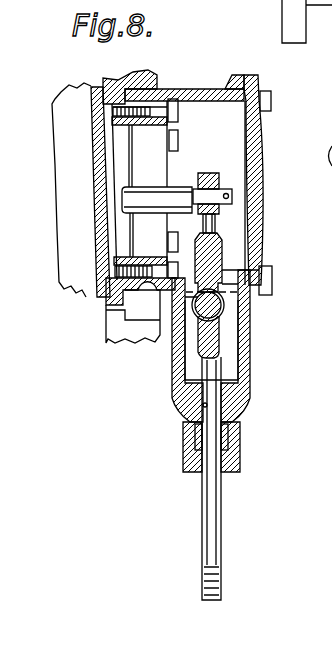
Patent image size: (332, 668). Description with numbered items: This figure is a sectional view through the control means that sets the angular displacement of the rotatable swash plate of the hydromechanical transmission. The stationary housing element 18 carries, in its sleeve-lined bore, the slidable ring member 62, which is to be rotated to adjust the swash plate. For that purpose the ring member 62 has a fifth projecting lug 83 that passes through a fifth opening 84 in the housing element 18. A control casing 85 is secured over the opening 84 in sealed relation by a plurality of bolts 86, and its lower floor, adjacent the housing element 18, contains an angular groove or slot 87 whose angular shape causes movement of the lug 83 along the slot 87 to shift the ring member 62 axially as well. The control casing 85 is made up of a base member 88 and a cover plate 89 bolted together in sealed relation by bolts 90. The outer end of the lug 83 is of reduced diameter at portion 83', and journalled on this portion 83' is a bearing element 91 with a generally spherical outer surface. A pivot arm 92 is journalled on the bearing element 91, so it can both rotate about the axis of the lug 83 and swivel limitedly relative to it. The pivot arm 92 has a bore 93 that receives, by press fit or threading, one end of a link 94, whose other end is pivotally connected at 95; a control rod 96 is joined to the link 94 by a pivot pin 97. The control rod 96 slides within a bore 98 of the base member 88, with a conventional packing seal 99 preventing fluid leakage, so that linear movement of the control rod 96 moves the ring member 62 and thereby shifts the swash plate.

The housing element 18 is at (102, 362).
The ring member 62 is at (84, 305).
The projecting lug 83 is at (157, 216).
The reduced-diameter portion 83' is at (218, 172).
The fifth opening 84 is at (118, 252).
The control casing 85 is at (271, 132).
The bolts 86 is at (172, 140).
The angular groove or slot 87 is at (138, 148).
The base member 88 is at (228, 84).
The cover plate 89 is at (262, 165).
The bolts 90 is at (271, 100).
The bearing element 91 is at (213, 177).
The pivot arm 92 is at (218, 226).
The bore 93 is at (214, 256).
The link 94 is at (270, 270).
The pivotal connection 95 is at (234, 314).
The control rod 96 is at (208, 519).
The pivot pin 97 is at (186, 323).
The bore 98 is at (203, 405).
The packing seal 99 is at (188, 445).